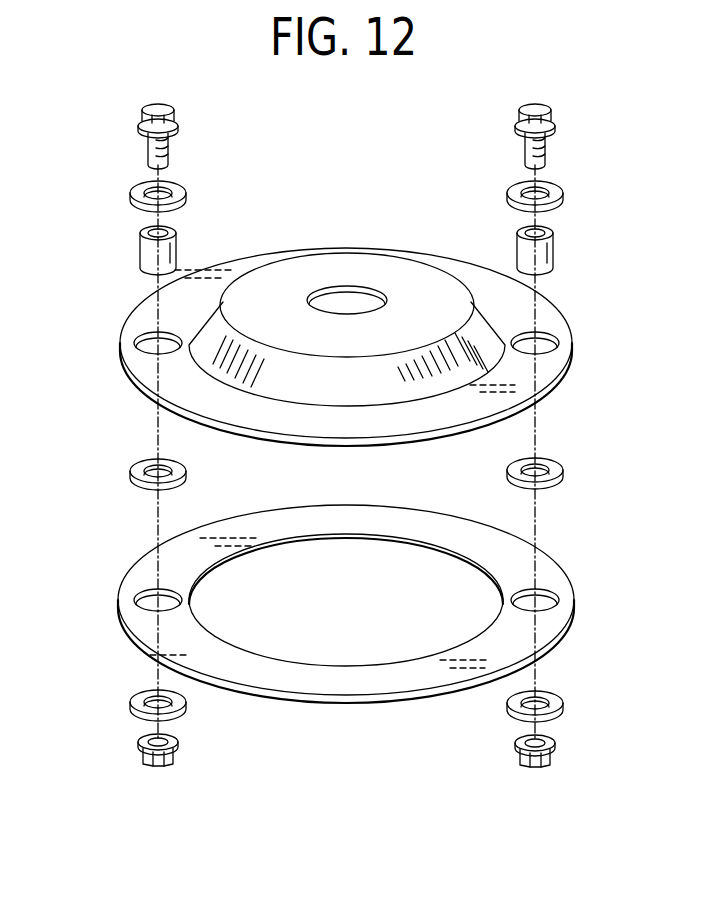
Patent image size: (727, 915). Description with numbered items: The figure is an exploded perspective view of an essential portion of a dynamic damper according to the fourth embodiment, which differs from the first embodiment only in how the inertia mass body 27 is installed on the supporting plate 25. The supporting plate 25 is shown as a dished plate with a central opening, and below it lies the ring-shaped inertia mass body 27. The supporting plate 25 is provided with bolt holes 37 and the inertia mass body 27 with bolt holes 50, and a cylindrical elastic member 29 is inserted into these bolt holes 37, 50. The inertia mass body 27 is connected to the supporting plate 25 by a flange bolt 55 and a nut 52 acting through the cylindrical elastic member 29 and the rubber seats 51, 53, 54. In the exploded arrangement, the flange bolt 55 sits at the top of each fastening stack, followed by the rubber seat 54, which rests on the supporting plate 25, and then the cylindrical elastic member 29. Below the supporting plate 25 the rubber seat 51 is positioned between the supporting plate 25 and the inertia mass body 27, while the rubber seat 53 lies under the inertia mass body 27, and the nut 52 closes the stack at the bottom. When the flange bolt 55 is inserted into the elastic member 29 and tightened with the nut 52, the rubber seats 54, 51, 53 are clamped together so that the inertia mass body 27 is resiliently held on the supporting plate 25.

The supporting plate 25 is at (463, 265).
The inertia mass body 27 is at (460, 528).
The cylindrical elastic member 29 is at (152, 256).
The bolt hole 37 is at (134, 343).
The bolt hole 50 is at (134, 600).
The rubber seat 51 is at (130, 472).
The nut 52 is at (138, 748).
The rubber seat 53 is at (130, 703).
The rubber seat 54 is at (130, 194).
The flange bolt 55 is at (142, 145).